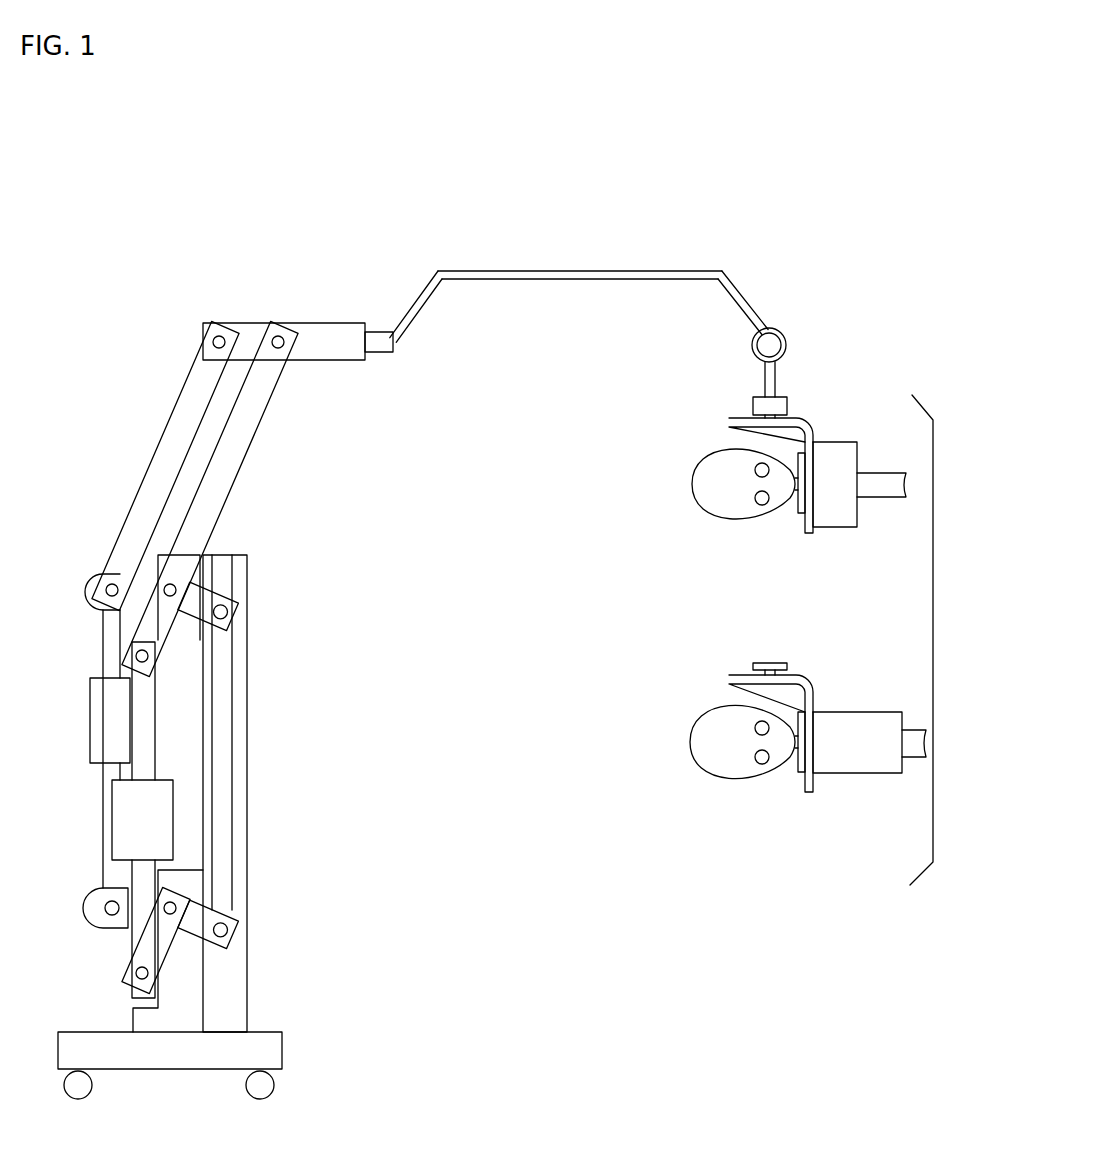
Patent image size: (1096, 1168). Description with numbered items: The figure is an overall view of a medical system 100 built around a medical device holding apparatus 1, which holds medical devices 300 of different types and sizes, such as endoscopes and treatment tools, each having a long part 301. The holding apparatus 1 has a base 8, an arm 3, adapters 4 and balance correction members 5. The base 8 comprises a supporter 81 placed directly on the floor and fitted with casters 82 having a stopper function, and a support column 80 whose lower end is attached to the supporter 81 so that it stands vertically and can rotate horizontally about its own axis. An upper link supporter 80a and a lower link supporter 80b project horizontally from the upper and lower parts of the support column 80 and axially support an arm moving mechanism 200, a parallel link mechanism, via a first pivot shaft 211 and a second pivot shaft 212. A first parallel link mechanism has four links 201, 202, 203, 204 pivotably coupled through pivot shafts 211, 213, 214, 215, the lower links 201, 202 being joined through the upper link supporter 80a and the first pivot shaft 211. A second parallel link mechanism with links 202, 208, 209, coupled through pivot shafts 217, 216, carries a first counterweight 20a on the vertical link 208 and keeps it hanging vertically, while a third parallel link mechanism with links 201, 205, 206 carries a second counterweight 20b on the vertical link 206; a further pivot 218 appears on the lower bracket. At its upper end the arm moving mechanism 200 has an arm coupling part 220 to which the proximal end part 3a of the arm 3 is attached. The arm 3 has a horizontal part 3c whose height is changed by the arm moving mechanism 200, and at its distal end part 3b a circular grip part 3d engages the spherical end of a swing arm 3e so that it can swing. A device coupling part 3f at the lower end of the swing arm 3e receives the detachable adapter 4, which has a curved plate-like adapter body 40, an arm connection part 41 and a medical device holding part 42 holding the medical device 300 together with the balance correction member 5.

The medical system 100 is at (750, 93).
The medical device holding apparatus 1 is at (709, 250).
The arm 3 is at (473, 268).
The proximal end part 3a is at (398, 344).
The distal end part 3b is at (765, 318).
The horizontal part 3c is at (590, 271).
The grip part 3d is at (787, 333).
The swing arm 3e is at (764, 378).
The device coupling part 3f is at (752, 406).
The adapter 4 is at (811, 418).
The adapter body 40 is at (808, 534).
The arm connection part 41 is at (770, 422).
The medical device holding part 42 is at (798, 512).
The balance correction member 5 is at (842, 452).
The base 8 is at (328, 946).
The support column 80 is at (249, 1013).
The upper link supporter 80a is at (188, 625).
The lower link supporter 80b is at (190, 875).
The supporter 81 is at (280, 1052).
The casters 82 is at (272, 1083).
The arm moving mechanism 200 is at (148, 323).
The link 201 is at (88, 587).
The link 202 is at (245, 470).
The link 203 is at (158, 465).
The link 204 is at (340, 332).
The link 205 is at (112, 930).
The link 206 is at (112, 630).
The link 208 is at (145, 742).
The link 209 is at (160, 953).
The first pivot shaft 211 is at (174, 584).
The second pivot shaft 212 is at (175, 905).
The pivot shaft 213 is at (108, 584).
The pivot shaft 214 is at (220, 335).
The pivot shaft 215 is at (279, 335).
The pivot shaft 216 is at (136, 657).
The pivot shaft 217 is at (136, 974).
The pivot 218 is at (106, 910).
The arm coupling part 220 is at (378, 340).
The first counterweight 20a is at (120, 826).
The second counterweight 20b is at (97, 718).
The medical device 300 is at (710, 517).
The long part 301 is at (885, 492).